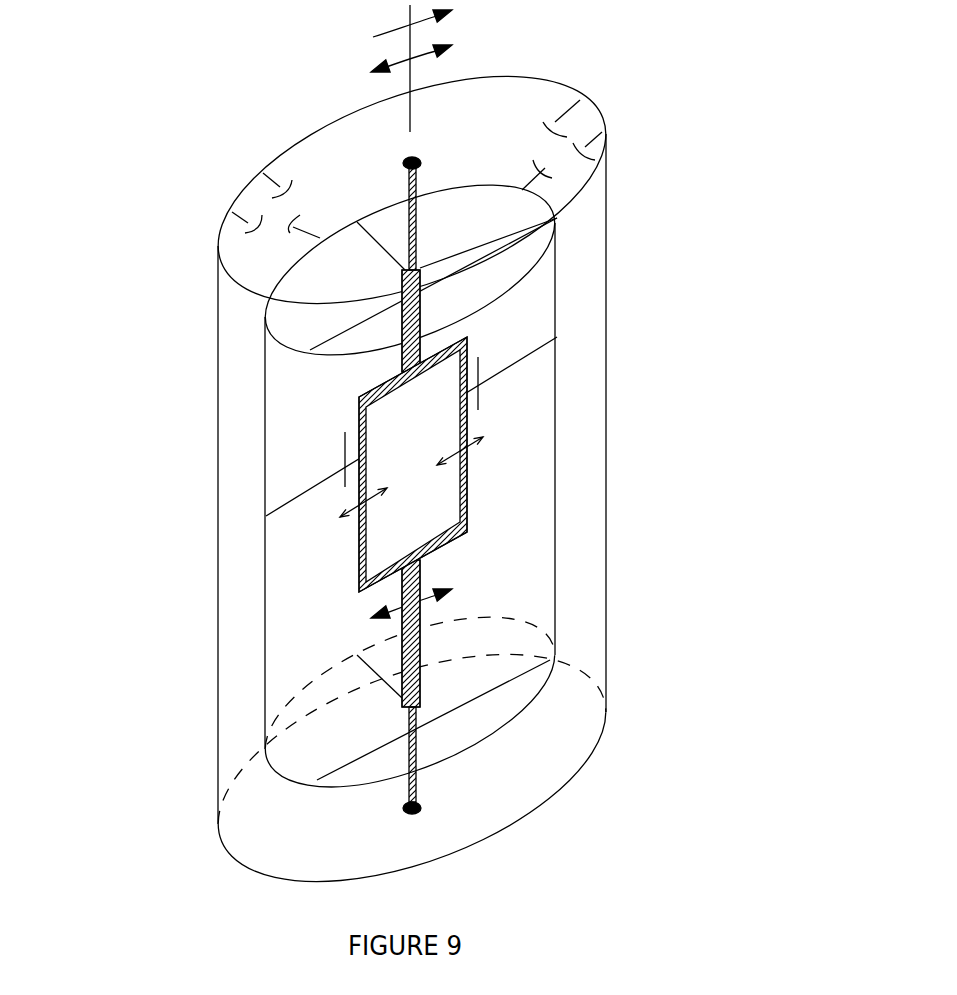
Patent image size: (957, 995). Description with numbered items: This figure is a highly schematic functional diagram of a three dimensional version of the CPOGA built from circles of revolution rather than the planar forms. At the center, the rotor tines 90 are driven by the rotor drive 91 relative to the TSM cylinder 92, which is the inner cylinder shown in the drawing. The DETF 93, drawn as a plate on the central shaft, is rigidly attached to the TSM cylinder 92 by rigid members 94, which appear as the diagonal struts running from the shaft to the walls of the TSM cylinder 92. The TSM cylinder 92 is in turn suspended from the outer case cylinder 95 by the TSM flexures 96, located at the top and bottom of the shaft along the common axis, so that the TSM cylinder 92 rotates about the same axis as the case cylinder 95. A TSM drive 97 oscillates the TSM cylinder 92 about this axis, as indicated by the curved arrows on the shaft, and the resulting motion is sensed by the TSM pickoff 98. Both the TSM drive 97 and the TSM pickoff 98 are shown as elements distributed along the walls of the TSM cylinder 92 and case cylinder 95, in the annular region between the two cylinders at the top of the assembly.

The rotor tines 90 is at (483, 437).
The rotor drive 91 is at (500, 387).
The TSM cylinder 92 is at (263, 610).
The DETF 93 is at (468, 482).
The rigid members 94 is at (510, 260).
The case cylinder 95 is at (607, 698).
The TSM flexures 96 is at (198, 832).
The TSM drive 97 is at (217, 187).
The TSM pickoff 98 is at (638, 120).